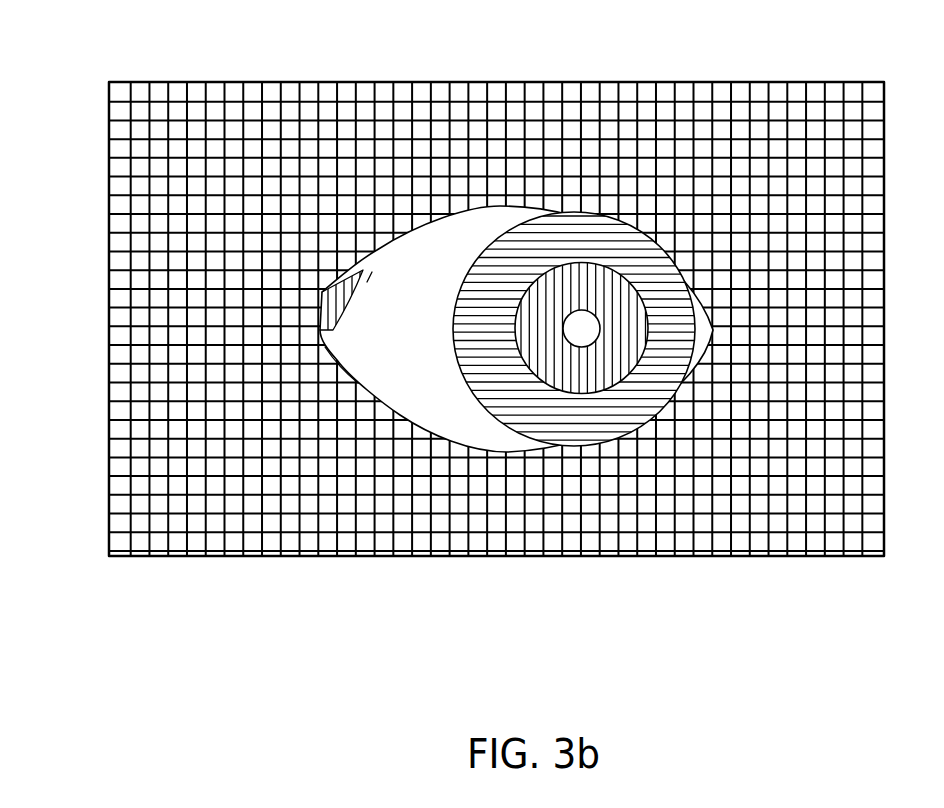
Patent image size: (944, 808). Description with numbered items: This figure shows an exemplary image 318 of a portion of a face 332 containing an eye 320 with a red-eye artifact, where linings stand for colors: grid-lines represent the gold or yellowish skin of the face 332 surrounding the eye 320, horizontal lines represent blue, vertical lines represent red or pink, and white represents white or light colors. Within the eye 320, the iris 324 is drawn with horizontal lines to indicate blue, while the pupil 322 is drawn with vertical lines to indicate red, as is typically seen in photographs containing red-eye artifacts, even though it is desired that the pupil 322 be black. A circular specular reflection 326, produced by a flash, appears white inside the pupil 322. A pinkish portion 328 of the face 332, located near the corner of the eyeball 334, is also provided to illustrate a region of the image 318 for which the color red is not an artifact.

The image 318 is at (715, 82).
The eye 320 is at (412, 346).
The pupil 322 is at (558, 362).
The iris 324 is at (645, 399).
The circular specular reflection 326 is at (580, 332).
The pinkish portion 328 is at (313, 310).
The face 332 is at (270, 177).
The eyeball 334 is at (397, 382).